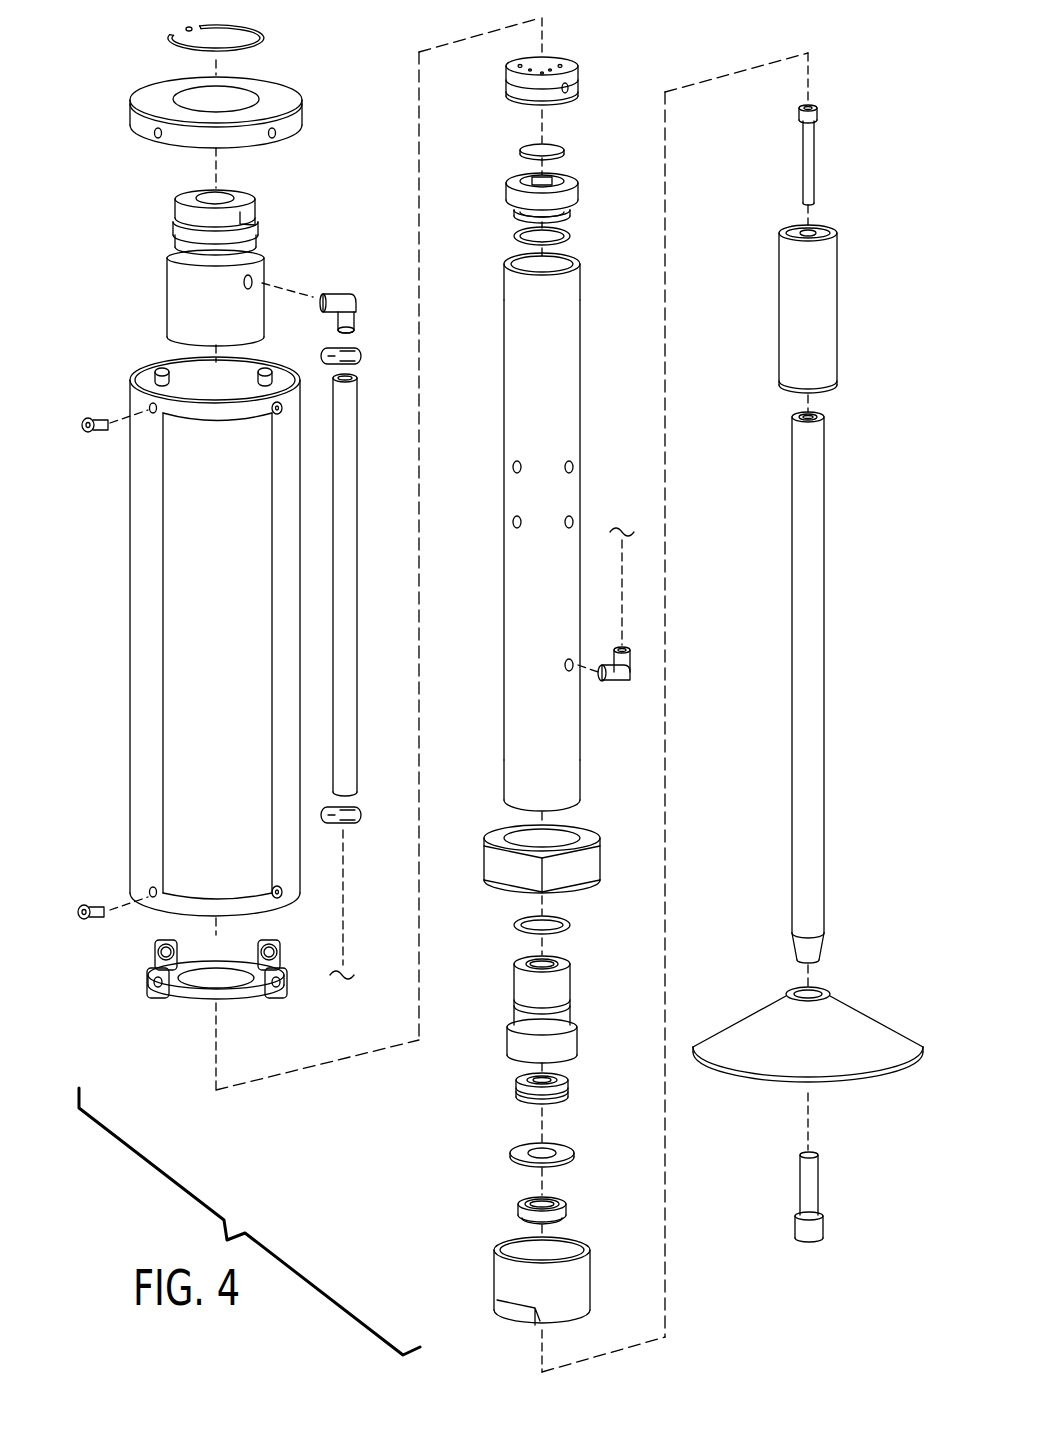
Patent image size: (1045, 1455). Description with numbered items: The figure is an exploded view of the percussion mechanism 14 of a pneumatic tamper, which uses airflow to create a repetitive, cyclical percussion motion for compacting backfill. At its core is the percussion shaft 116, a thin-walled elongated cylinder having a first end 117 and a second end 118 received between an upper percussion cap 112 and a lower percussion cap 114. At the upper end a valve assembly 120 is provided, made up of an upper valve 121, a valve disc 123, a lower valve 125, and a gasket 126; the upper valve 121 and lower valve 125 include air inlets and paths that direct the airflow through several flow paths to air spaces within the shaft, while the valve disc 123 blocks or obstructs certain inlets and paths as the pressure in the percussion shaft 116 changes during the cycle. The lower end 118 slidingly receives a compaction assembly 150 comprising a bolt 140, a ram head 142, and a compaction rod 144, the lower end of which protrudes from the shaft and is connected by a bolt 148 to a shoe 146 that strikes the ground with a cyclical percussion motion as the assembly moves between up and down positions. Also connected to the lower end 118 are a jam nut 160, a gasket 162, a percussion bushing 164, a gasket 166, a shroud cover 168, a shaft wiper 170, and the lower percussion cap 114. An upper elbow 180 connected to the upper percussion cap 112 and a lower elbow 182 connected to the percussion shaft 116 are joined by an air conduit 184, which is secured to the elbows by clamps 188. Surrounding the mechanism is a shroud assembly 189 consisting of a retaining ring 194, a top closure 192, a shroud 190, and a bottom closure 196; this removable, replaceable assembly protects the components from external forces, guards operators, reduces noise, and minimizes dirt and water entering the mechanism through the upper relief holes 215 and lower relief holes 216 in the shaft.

The percussion mechanism 14 is at (367, 1118).
The upper percussion cap 112 is at (177, 293).
The lower percussion cap 114 is at (515, 1282).
The percussion shaft 116 is at (573, 372).
The first end 117 is at (518, 280).
The second end 118 is at (518, 778).
The valve assembly 120 is at (586, 38).
The upper valve 121 is at (510, 82).
The valve disc 123 is at (557, 145).
The lower valve 125 is at (577, 188).
The gasket 126 is at (570, 233).
The bolt 140 is at (810, 155).
The ram head 142 is at (823, 292).
The compaction rod 144 is at (814, 606).
The shoe 146 is at (855, 1013).
The bolt 148 is at (812, 1178).
The compaction assembly 150 is at (862, 486).
The jam nut 160 is at (590, 863).
The gasket 162 is at (570, 925).
The percussion bushing 164 is at (558, 1020).
The gasket 166 is at (567, 1090).
The shroud cover 168 is at (568, 1152).
The shaft wiper 170 is at (515, 1207).
The upper elbow 180 is at (353, 303).
The lower elbow 182 is at (627, 667).
The air conduit 184 is at (348, 630).
The clamps 188 is at (357, 350).
The shroud assembly 189 is at (103, 628).
The shroud 190 is at (145, 748).
The top closure 192 is at (157, 100).
The retaining ring 194 is at (262, 33).
The bottom closure 196 is at (195, 992).
The upper relief holes 215 is at (515, 462).
The lower relief holes 216 is at (515, 520).